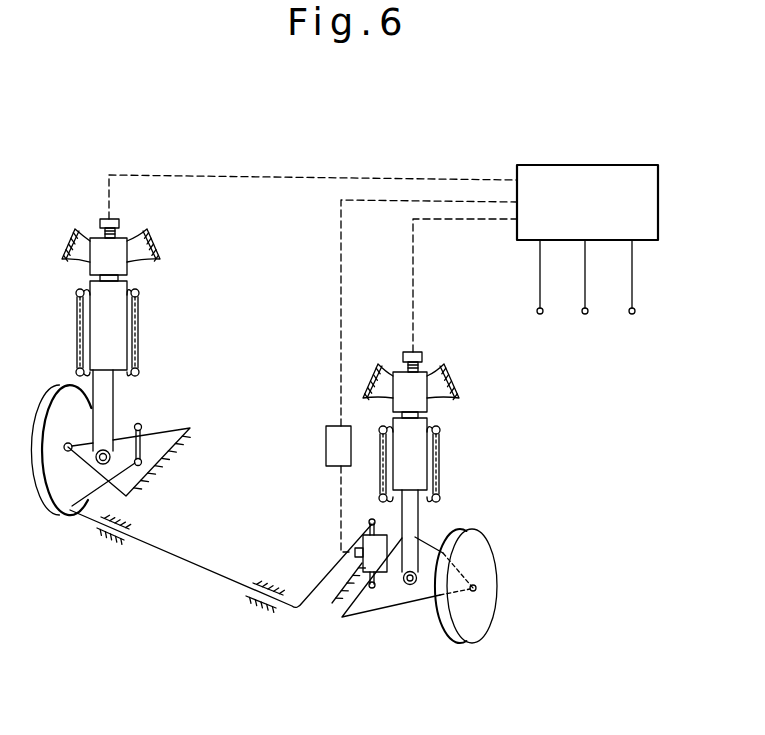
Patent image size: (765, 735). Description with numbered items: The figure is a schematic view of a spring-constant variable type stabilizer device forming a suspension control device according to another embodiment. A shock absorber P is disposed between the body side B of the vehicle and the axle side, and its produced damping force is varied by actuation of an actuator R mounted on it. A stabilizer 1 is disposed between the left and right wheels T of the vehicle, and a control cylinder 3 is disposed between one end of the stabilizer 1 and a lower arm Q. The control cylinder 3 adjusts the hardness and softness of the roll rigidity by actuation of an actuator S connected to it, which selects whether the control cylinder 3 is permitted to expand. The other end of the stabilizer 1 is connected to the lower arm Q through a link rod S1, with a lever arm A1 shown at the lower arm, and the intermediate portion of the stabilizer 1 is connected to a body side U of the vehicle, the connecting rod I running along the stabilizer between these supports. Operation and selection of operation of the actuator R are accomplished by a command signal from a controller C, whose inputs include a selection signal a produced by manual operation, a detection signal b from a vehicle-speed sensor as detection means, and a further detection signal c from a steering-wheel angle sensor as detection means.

The stabilizer 1 is at (77, 314).
The control cylinder 3 is at (341, 616).
The actuator R is at (99, 222).
The body side B is at (163, 250).
The link rod S1 is at (150, 424).
The triangular lever arm A1 is at (188, 429).
The lower arm Q is at (152, 478).
The wheels T is at (47, 500).
The connecting rod I is at (181, 562).
The body side U is at (264, 582).
The actuator S is at (326, 444).
The shock absorber P is at (444, 464).
The controller C is at (576, 182).
The selection signal a is at (540, 314).
The detection signal b is at (585, 314).
The control unit terminal c is at (632, 314).